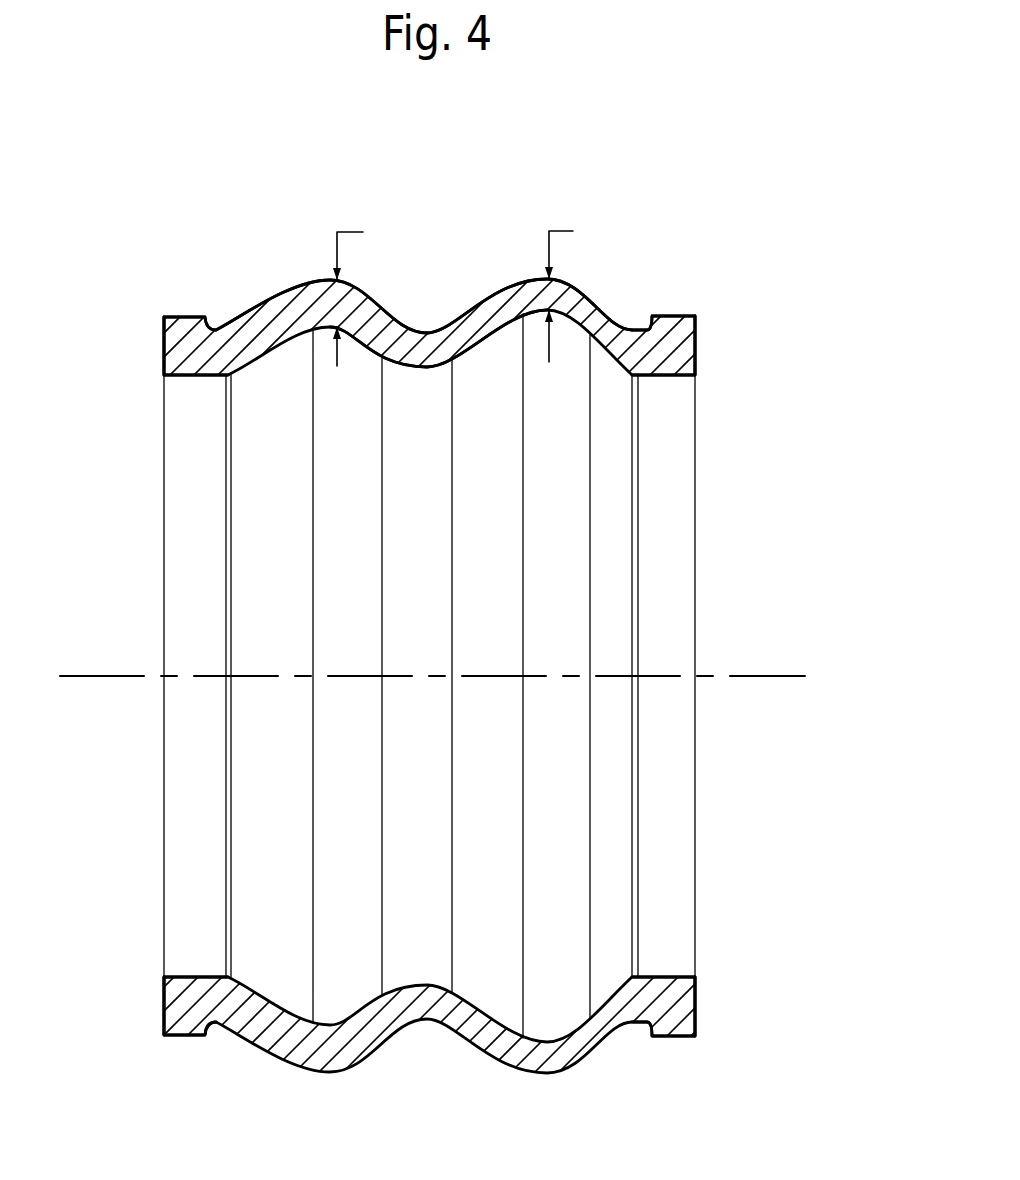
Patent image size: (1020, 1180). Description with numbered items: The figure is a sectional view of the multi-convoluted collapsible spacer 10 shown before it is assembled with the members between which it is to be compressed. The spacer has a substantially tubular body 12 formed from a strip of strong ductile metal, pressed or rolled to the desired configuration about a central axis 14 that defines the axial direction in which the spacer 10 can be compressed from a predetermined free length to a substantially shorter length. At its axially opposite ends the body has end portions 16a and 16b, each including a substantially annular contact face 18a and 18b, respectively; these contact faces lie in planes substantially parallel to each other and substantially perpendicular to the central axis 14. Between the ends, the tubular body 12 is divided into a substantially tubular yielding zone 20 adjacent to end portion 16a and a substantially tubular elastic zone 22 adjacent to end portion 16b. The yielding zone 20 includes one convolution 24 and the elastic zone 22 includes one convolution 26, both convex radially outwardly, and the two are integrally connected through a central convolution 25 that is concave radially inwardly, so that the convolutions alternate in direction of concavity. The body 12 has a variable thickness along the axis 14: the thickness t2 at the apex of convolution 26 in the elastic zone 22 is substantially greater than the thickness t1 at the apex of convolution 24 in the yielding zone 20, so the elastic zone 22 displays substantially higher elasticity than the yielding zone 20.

The multi-convoluted collapsible spacer 10 is at (782, 428).
The tubular body 12 is at (597, 1057).
The central axis 14 is at (673, 675).
The end portion 16a is at (651, 982).
The end portion 16b is at (192, 977).
The contact face 18a is at (695, 1007).
The contact face 18b is at (165, 998).
The yielding zone 20 is at (455, 1100).
The elastic zone 22 is at (240, 1100).
The convolution 24 is at (573, 293).
The central convolution 25 is at (425, 333).
The convolution 26 is at (313, 283).
The thickness t1 is at (559, 281).
The thickness t2 is at (348, 284).